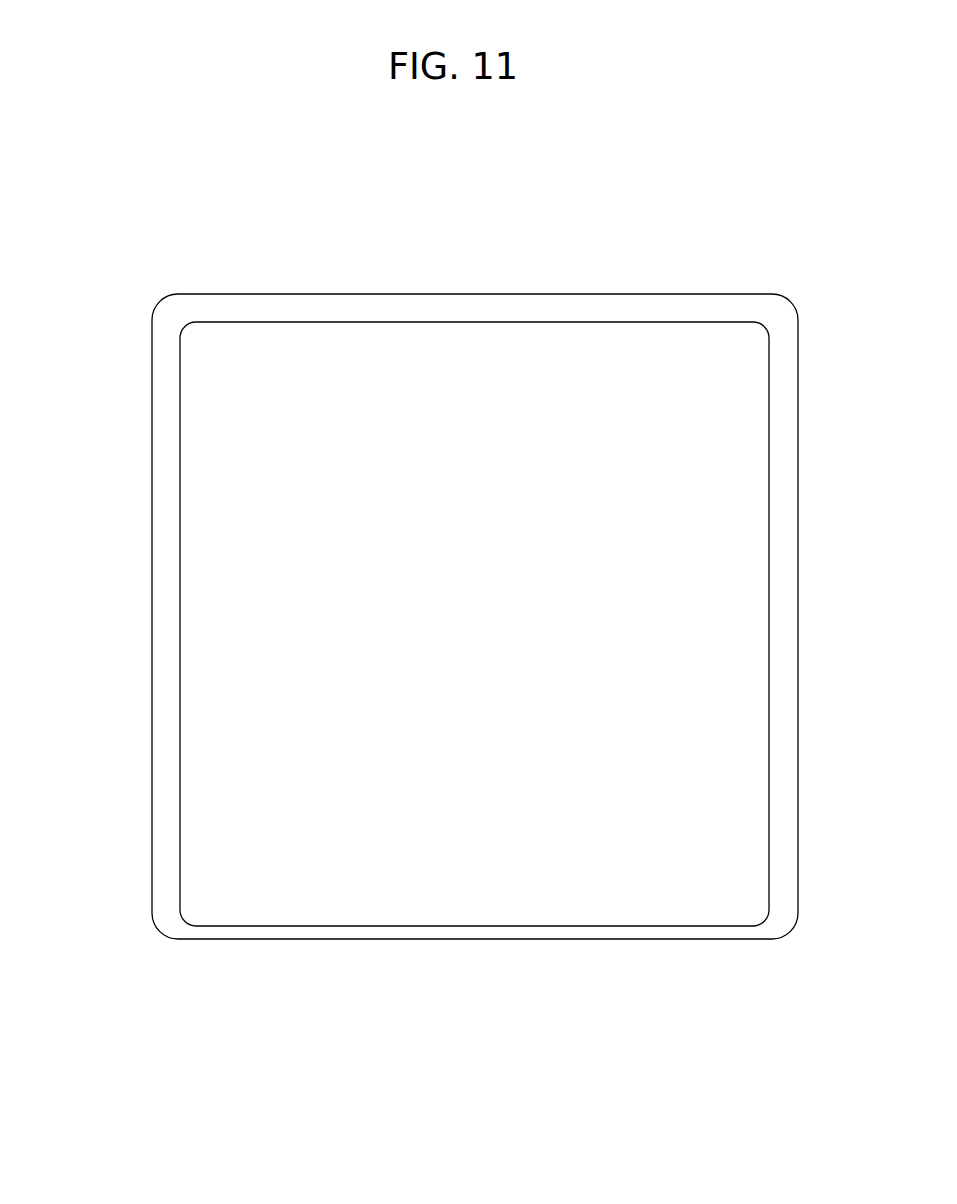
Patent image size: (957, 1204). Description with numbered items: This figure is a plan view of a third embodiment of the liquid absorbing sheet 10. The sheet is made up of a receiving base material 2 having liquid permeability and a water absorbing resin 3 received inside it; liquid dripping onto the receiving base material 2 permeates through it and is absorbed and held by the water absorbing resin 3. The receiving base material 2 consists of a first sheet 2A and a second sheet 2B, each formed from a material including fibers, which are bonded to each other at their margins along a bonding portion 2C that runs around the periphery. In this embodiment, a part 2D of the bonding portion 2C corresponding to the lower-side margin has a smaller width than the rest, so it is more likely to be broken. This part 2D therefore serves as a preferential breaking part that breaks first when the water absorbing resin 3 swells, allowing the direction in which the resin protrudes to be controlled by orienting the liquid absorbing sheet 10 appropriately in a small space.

The liquid absorbing sheet 10 is at (704, 196).
The receiving base material 2 is at (722, 618).
The water absorbing resin 3 is at (418, 355).
The first sheet 2A is at (220, 412).
The second sheet 2B is at (215, 820).
The bonding portion 2C is at (168, 612).
The part 2D is at (618, 932).